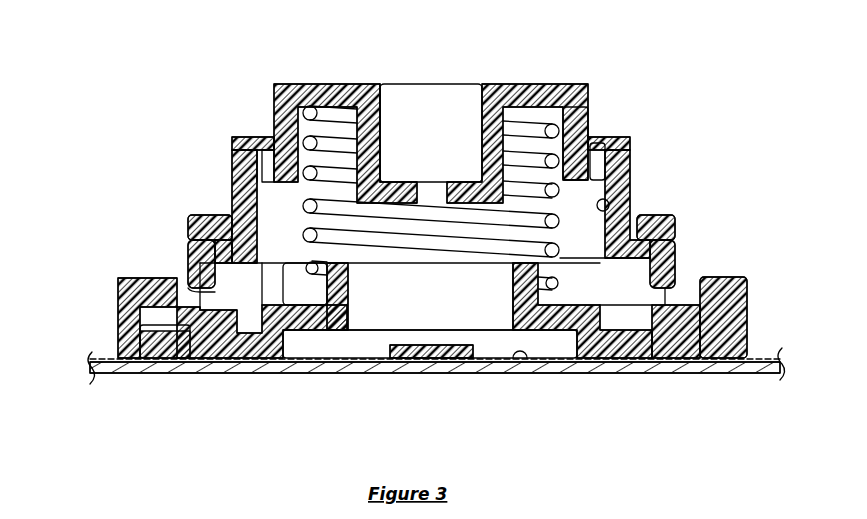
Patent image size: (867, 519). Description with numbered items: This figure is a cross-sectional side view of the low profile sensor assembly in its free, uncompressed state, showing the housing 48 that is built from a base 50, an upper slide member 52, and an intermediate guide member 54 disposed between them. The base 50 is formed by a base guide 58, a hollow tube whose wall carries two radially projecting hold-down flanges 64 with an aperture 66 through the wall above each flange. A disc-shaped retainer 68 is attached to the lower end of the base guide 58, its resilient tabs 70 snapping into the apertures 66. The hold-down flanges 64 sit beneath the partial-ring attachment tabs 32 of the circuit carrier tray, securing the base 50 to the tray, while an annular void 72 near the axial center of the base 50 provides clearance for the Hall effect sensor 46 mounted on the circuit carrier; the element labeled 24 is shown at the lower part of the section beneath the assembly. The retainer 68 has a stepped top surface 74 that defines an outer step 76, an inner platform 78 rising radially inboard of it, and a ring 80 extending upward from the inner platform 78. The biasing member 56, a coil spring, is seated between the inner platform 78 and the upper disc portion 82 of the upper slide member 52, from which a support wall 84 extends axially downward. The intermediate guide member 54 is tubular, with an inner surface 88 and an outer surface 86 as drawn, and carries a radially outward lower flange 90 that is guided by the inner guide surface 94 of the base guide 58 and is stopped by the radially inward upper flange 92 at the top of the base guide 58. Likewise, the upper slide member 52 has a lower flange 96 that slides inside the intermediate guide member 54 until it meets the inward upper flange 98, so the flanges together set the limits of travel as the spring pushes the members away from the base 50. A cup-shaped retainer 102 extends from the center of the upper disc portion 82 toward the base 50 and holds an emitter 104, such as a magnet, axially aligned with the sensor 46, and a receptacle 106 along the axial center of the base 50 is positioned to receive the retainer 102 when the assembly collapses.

The substrate 24 is at (525, 352).
The attachment tab 32 is at (723, 297).
The sensor 46 is at (413, 347).
The housing 48 is at (678, 218).
The base 50 is at (663, 273).
The upper slide member 52 is at (577, 115).
The intermediate guide member 54 is at (620, 148).
The biasing member 56 is at (256, 172).
The base guide 58 is at (200, 248).
The hold-down flange 64 is at (183, 338).
The aperture 66 is at (207, 297).
The retainer 68 is at (618, 360).
The resilient tab 70 is at (673, 312).
The annular void 72 is at (320, 347).
The top surface 74 is at (282, 300).
The outer step 76 is at (235, 330).
The inner platform 78 is at (283, 290).
The ring 80 is at (345, 280).
The upper disc portion 82 is at (523, 100).
The support wall 84 is at (277, 110).
The cap right wall 86 is at (633, 178).
The inner surface 88 is at (627, 210).
The lower flange 90 is at (192, 233).
The upper flange 92 is at (215, 222).
The inner guide surface 94 is at (207, 266).
The lower flange 96 is at (260, 142).
The upper flange 98 is at (264, 116).
The retainer 102 is at (377, 100).
The emitter 104 is at (422, 105).
The receptacle 106 is at (480, 313).